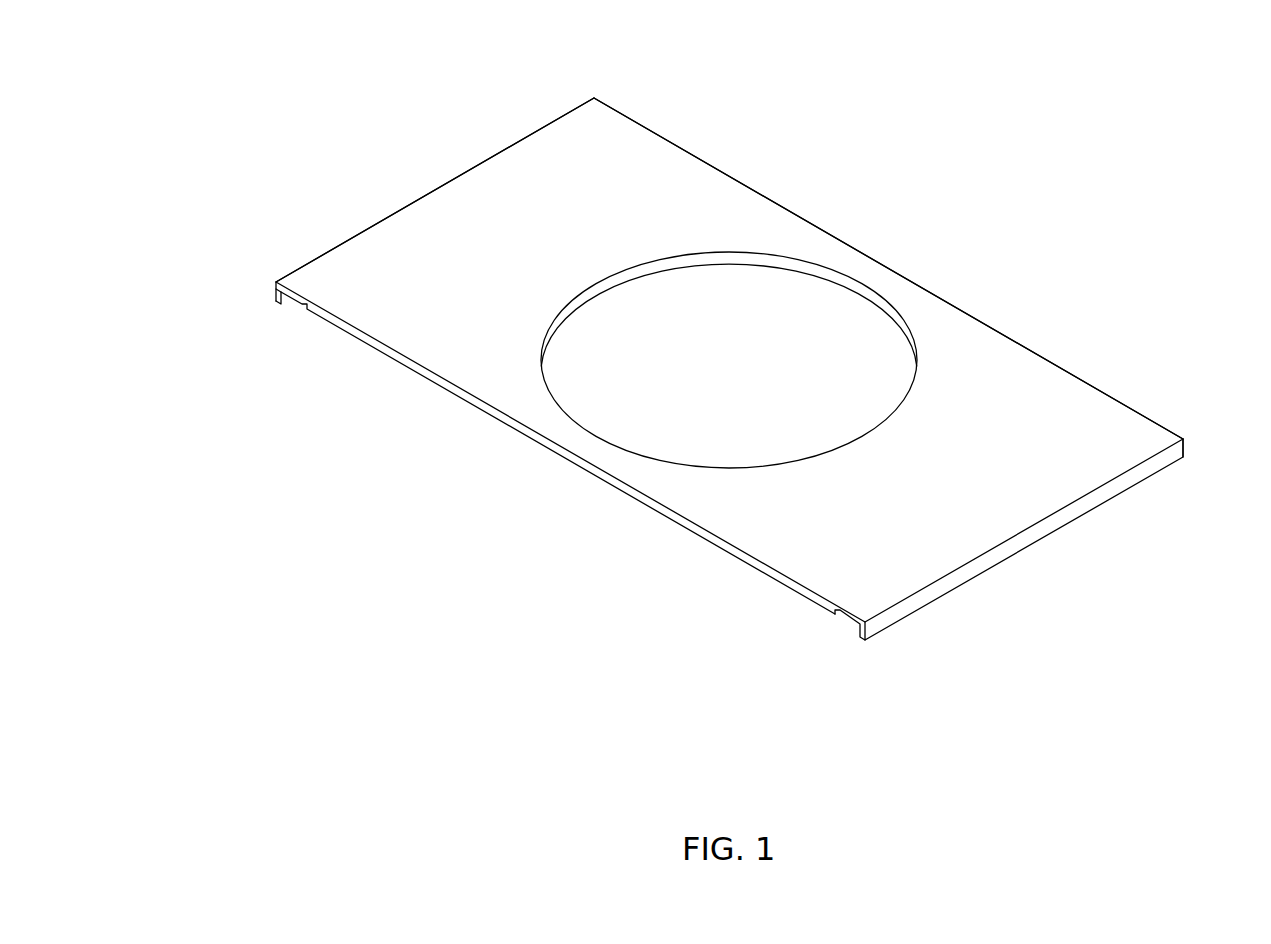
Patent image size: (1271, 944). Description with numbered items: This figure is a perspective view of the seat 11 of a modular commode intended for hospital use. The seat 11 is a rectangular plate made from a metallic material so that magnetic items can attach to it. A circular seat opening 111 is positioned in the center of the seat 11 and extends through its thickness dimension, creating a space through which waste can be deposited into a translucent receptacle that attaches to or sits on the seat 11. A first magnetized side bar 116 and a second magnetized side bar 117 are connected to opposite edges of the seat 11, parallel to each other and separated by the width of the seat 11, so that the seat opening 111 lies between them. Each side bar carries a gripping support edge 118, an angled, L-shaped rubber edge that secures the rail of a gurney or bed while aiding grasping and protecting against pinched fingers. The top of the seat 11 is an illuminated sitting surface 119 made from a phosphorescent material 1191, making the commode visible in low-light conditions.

The seat 11 is at (343, 118).
The seat opening 111 is at (830, 305).
The first magnetized side bar 116 is at (344, 258).
The second magnetized side bar 117 is at (1156, 440).
The gripping support edge 118 is at (298, 297).
The illuminated sitting surface 119 is at (686, 113).
The phosphorescent material 1191 is at (562, 150).